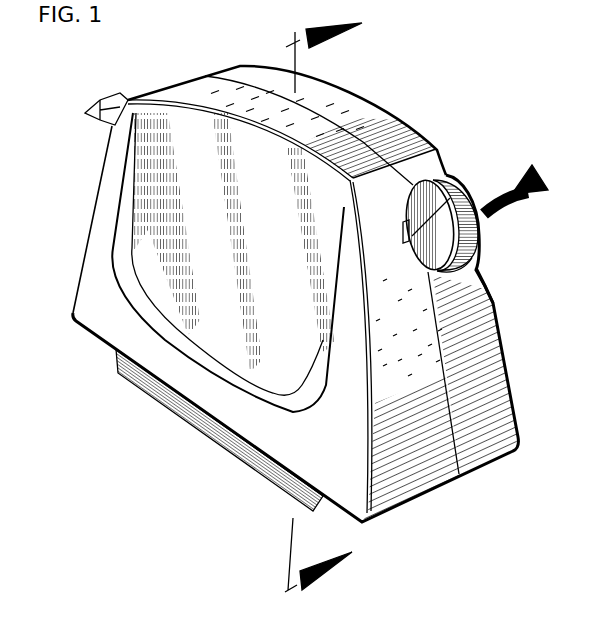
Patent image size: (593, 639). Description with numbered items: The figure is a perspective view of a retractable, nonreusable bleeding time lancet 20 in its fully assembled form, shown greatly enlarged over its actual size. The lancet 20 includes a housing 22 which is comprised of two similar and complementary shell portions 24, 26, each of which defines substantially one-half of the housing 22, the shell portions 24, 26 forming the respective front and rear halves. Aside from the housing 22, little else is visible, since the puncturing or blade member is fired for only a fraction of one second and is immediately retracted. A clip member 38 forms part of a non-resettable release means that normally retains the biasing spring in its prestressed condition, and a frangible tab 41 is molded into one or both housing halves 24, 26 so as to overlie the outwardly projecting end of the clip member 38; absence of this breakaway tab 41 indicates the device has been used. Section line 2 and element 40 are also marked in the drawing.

The section line 2- 2 is at (314, 320).
The retractable bleeding time lancet 20 is at (417, 104).
The housing 22 is at (476, 262).
The shell portion 24 is at (396, 490).
The shell portion 26 is at (492, 448).
The clip member 38 is at (453, 194).
The actuating lever 40 is at (96, 101).
The frangible tab 41 is at (468, 258).